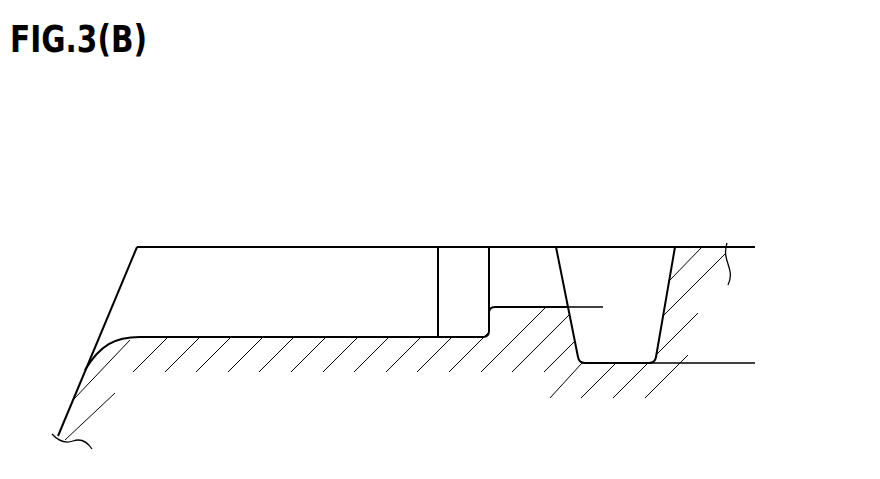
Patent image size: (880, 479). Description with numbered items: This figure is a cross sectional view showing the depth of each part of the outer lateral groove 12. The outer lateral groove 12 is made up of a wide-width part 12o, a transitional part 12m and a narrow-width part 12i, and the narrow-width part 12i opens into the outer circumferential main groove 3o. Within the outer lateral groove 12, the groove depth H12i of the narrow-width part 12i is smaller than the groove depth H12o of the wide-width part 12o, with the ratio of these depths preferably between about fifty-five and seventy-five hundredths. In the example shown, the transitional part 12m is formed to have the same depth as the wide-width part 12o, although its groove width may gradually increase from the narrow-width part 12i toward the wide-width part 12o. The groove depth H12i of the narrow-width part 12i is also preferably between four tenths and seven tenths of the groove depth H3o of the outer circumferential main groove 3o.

The outer lateral groove 12 is at (552, 163).
The wide-width part 12o is at (369, 265).
The transitional part 12m is at (461, 265).
The narrow-width part 12i is at (532, 265).
The outer circumferential main groove 3o is at (646, 267).
The groove depth of the wide-width part H12o is at (191, 249).
The groove depth of the narrow-width part H12i is at (598, 215).
The groove depth of the outer circumferential main groove H3o is at (751, 249).